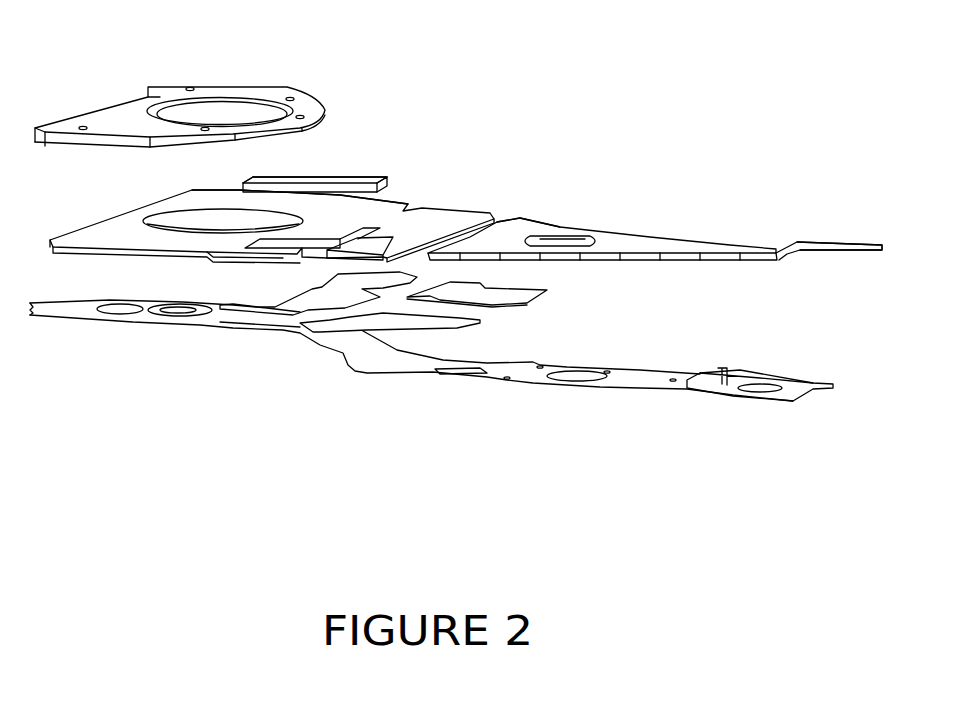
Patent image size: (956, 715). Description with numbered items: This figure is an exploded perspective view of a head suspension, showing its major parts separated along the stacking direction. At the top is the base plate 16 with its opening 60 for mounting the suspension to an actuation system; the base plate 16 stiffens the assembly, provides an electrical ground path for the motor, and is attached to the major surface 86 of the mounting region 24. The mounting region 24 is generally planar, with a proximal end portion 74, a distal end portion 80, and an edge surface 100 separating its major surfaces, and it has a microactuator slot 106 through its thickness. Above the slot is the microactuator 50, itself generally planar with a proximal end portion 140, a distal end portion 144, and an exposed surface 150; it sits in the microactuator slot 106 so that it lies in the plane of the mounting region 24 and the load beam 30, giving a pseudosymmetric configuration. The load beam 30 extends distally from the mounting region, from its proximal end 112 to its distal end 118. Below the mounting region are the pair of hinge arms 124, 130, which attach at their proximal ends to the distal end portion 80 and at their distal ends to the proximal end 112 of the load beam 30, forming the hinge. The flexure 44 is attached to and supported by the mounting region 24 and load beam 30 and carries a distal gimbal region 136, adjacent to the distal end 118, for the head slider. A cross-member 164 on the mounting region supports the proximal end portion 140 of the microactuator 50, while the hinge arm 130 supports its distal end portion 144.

The base plate 16 is at (200, 83).
The opening 60 is at (252, 113).
The surface 150 is at (343, 178).
The microactuator 50 is at (363, 175).
The proximal end portion 140 is at (248, 180).
The distal end portion 144 is at (387, 177).
The distal end portion 80 is at (478, 211).
The proximal end 112 is at (522, 218).
The load beam 30 is at (653, 236).
The distal end 118 is at (815, 242).
The major surface 86 is at (147, 210).
The proximal end portion 74 is at (200, 190).
The mounting region 24 is at (279, 254).
The edge surface 100 is at (118, 250).
The hinge arm 124 is at (545, 300).
The hinge arm 130 is at (482, 320).
The cross-member 164 is at (217, 322).
The microactuator slot 106 is at (327, 250).
The flexure 44 is at (431, 371).
The gimbal region 136 is at (777, 402).